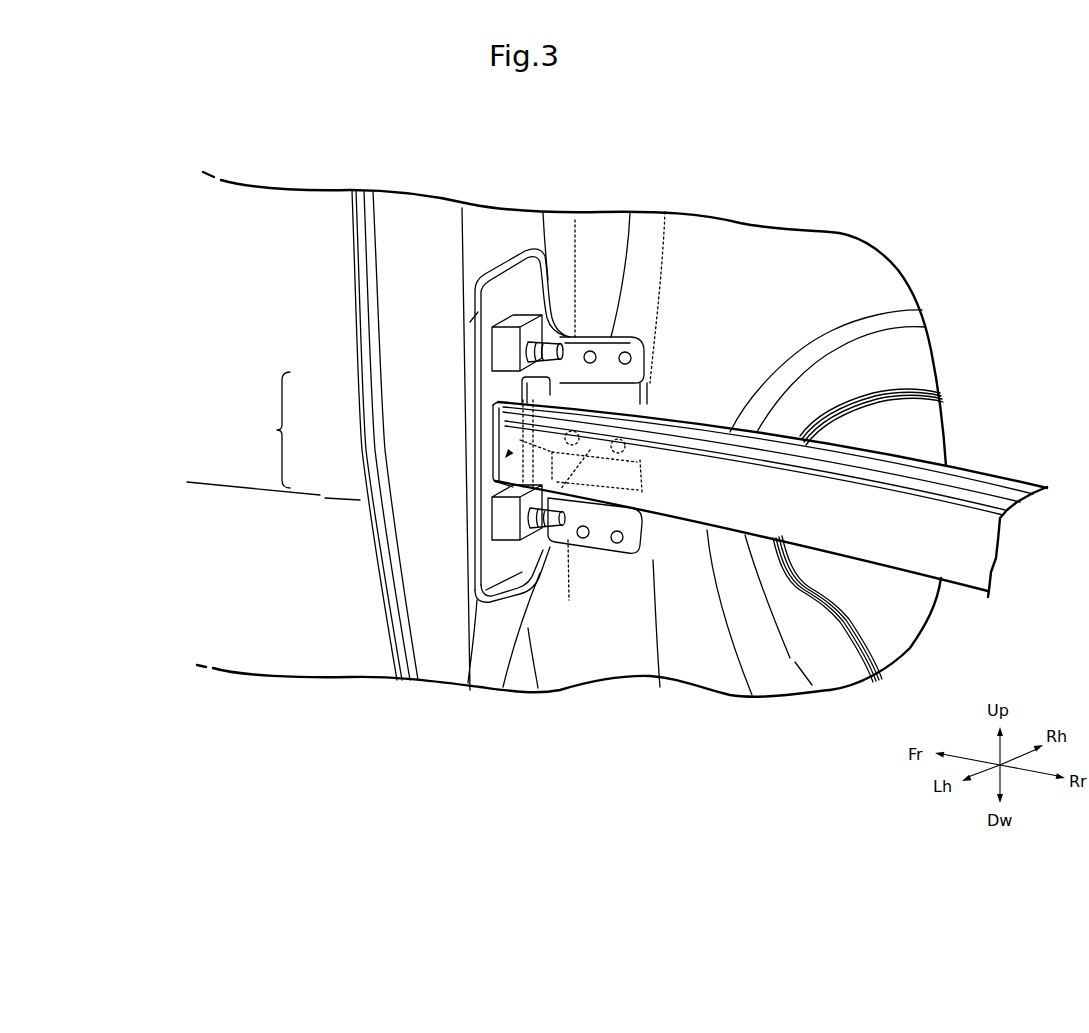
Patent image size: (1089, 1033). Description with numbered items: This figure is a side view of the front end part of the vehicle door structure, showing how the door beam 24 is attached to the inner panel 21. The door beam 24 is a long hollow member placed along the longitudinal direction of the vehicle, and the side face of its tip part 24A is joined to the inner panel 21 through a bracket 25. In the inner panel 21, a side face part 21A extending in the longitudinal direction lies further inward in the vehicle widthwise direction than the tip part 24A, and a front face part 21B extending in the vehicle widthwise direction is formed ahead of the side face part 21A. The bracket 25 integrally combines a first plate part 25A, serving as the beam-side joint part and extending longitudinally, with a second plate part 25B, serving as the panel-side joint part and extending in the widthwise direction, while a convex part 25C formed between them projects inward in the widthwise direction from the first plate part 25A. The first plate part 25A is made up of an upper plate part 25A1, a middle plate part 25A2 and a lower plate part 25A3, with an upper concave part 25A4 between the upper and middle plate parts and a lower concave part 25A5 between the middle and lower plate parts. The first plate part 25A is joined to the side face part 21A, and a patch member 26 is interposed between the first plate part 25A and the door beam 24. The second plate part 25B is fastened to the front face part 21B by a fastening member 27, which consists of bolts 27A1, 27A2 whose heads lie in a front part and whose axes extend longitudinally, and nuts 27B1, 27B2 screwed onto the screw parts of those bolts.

The inner panel 21 is at (863, 272).
The side face part 21A is at (801, 252).
The front face part 21B is at (388, 273).
The door beam 24 is at (962, 555).
The tip part 24A is at (633, 412).
The bracket 25 is at (583, 327).
The first plate part 25A is at (648, 386).
The upper plate part 25A1 is at (613, 340).
The middle plate part 25A2 is at (660, 450).
The lower plate part 25A3 is at (604, 548).
The upper concave part 25A4 is at (652, 405).
The lower concave part 25A5 is at (645, 548).
The second plate part 25B is at (486, 303).
The convex part 25C is at (580, 318).
The patch member 26 is at (568, 600).
The fastening member 27 is at (270, 430).
The bolt 27A1 is at (500, 351).
The bolt 27A2 is at (528, 527).
The nut 27B1 is at (492, 372).
The nut 27B2 is at (492, 514).